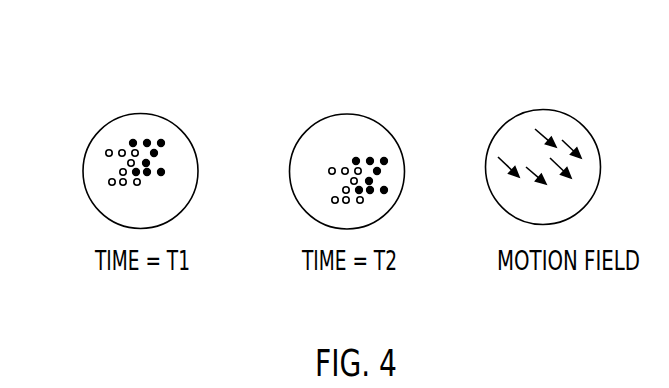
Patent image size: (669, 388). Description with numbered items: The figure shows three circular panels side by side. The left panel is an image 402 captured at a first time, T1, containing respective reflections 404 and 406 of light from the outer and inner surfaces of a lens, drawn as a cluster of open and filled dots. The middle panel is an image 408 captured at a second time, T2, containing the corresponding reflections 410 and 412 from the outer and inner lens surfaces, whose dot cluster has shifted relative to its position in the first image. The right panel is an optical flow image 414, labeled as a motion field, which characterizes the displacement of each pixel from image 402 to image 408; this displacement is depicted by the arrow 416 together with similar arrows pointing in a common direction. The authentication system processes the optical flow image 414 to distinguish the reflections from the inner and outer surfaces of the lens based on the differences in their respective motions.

The image 402 is at (138, 112).
The reflection 404 is at (112, 182).
The reflection 406 is at (133, 143).
The image 408 is at (346, 114).
The reflection 410 is at (335, 200).
The reflection 412 is at (356, 161).
The optical flow image 414 is at (543, 110).
The arrow 416 is at (528, 155).